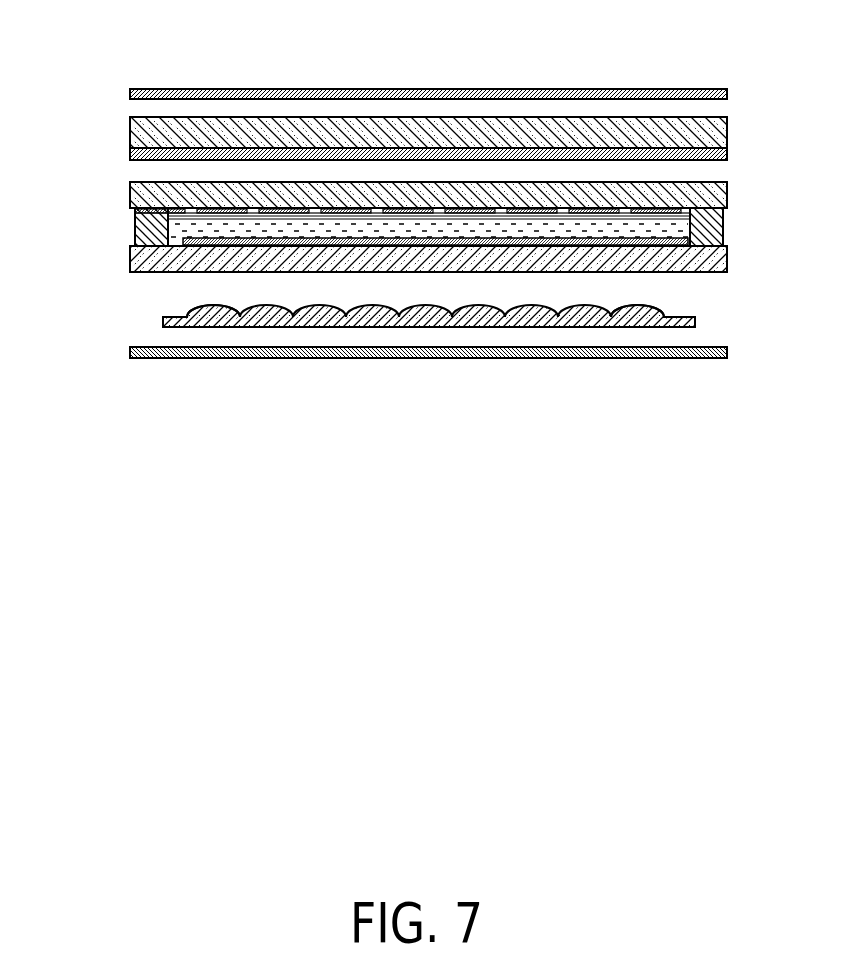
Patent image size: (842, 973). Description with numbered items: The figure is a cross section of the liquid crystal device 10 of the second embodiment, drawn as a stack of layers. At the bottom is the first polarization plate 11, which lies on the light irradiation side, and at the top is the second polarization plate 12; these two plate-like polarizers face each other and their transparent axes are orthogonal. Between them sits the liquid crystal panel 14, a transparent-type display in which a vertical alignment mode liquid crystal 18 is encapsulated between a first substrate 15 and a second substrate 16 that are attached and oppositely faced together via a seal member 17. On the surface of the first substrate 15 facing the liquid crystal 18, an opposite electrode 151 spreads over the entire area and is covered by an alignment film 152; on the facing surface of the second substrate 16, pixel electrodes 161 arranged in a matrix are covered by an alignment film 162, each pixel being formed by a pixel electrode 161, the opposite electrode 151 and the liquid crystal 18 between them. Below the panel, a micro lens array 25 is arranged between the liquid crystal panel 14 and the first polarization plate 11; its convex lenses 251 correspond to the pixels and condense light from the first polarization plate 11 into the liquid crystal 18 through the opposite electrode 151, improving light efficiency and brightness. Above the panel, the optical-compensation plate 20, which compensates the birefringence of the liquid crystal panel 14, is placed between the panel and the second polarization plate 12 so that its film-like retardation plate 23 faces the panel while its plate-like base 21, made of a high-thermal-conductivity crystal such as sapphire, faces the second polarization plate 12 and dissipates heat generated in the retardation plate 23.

The liquid crystal device 10 is at (633, 77).
The first polarization plate 11 is at (130, 353).
The second polarization plate 12 is at (130, 95).
The liquid crystal panel 14 is at (737, 276).
The first substrate 15 is at (727, 267).
The second substrate 16 is at (727, 192).
The seal member 17 is at (723, 240).
The liquid crystal 18 is at (135, 230).
The optical-compensation plate 20 is at (52, 121).
The plate-like base 21 is at (130, 128).
The retardation plate 23 is at (130, 155).
The micro lens array 25 is at (163, 318).
The opposite electrode 151 is at (320, 246).
The alignment film 152 is at (133, 247).
The pixel electrodes 161 is at (650, 219).
The alignment film 162 is at (133, 206).
The convex lenses 251 is at (220, 304).